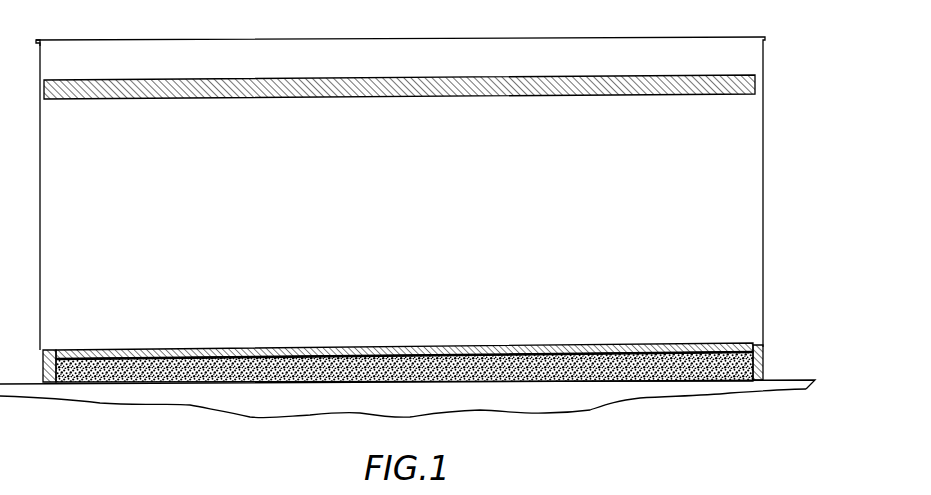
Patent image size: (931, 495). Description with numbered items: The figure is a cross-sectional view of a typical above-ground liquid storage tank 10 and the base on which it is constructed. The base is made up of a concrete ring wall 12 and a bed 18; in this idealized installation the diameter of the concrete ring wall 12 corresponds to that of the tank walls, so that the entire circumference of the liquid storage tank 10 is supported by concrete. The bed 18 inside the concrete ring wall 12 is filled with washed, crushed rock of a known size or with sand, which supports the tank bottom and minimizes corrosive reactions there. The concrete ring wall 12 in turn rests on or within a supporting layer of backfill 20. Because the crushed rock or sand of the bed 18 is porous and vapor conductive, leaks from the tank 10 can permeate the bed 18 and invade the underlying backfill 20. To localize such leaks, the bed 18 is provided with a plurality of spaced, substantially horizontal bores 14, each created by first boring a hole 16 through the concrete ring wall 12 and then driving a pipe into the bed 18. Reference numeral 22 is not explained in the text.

The liquid storage tank 10 is at (763, 172).
The concrete ring wall 12 is at (343, 347).
The horizontal bores 14 is at (607, 358).
The hole 16 is at (763, 347).
The bed 18 is at (82, 368).
The backfill 20 is at (478, 402).
The top plate 22 is at (303, 98).